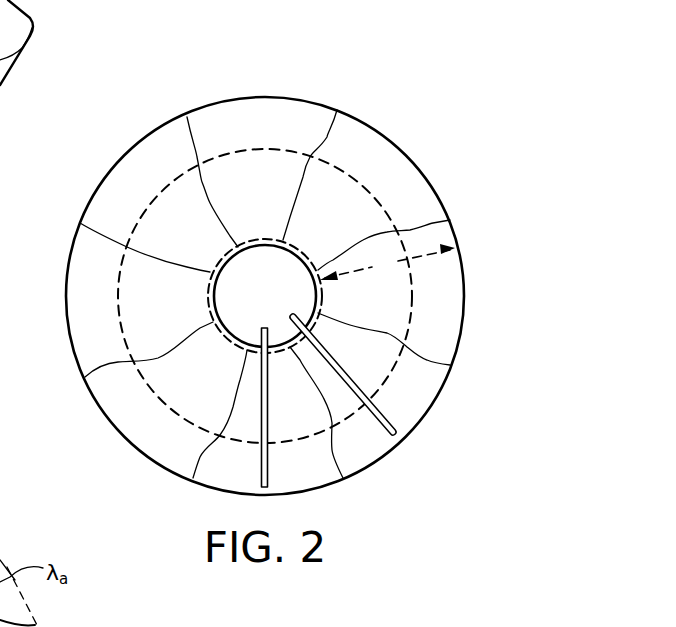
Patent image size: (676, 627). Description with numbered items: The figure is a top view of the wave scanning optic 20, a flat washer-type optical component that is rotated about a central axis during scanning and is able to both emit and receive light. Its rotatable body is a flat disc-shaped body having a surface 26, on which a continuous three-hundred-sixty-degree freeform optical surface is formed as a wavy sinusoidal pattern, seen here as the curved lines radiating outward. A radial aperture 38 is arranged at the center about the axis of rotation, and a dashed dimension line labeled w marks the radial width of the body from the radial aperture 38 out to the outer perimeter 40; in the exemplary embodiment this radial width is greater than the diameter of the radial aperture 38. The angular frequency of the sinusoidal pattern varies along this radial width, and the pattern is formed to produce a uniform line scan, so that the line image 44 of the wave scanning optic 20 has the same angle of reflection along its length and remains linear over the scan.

The wave scanning optic 20 is at (185, 88).
The surface 26 is at (134, 406).
The radial aperture 38 is at (207, 296).
The outer perimeter 40 is at (153, 463).
The line image 44 is at (385, 412).